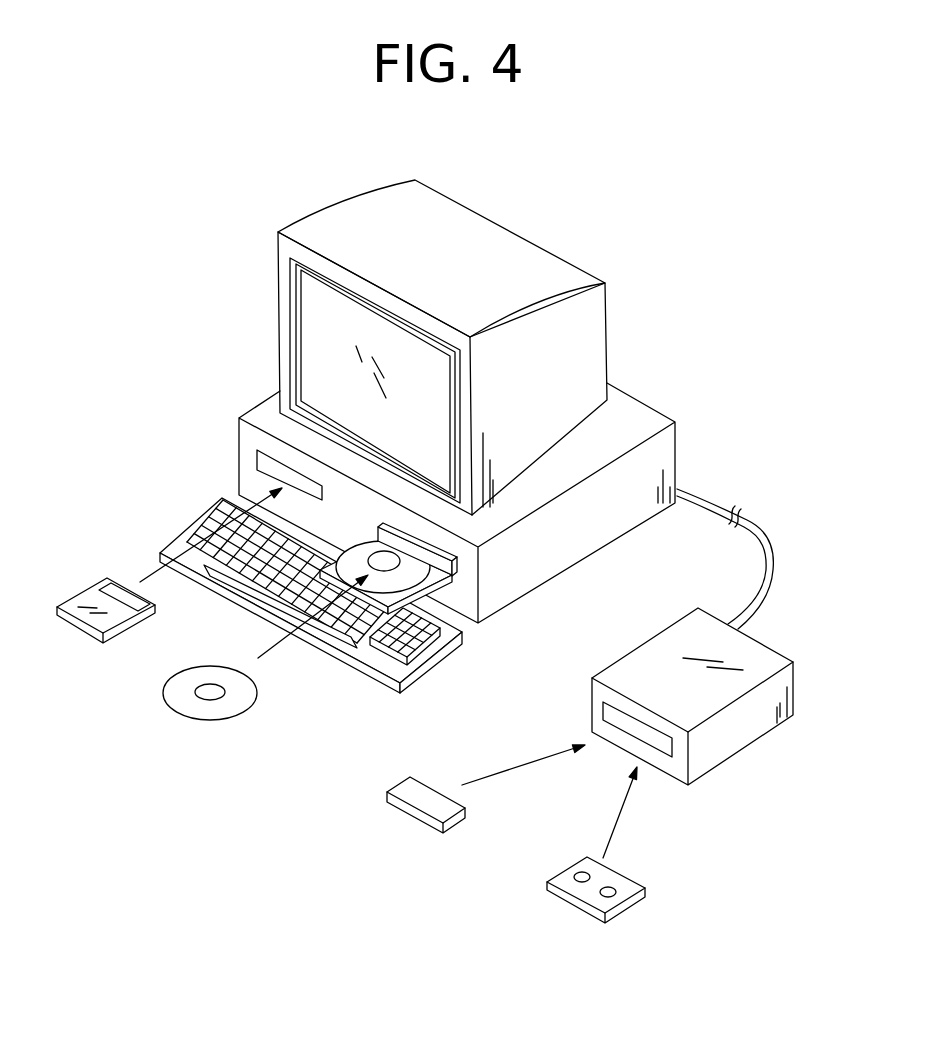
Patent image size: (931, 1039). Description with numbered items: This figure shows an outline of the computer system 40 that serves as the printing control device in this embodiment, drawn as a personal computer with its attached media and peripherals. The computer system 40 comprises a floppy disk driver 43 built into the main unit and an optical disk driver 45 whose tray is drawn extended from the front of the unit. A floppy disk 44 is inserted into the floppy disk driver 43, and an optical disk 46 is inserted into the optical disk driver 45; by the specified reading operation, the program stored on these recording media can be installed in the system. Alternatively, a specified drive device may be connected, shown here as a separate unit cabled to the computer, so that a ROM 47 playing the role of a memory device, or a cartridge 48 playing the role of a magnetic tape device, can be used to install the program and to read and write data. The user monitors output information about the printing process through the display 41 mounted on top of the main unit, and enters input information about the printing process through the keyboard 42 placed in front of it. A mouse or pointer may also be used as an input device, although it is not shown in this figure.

The personal computer 40 is at (631, 228).
The display 41 is at (593, 348).
The keyboard 42 is at (445, 658).
The floppy disk driver 43 is at (260, 462).
The floppy disk 44 is at (85, 592).
The optical disk driver 45 is at (470, 553).
The optical disk 46 is at (242, 720).
The ROM 47 is at (412, 815).
The cartridge 48 is at (577, 910).